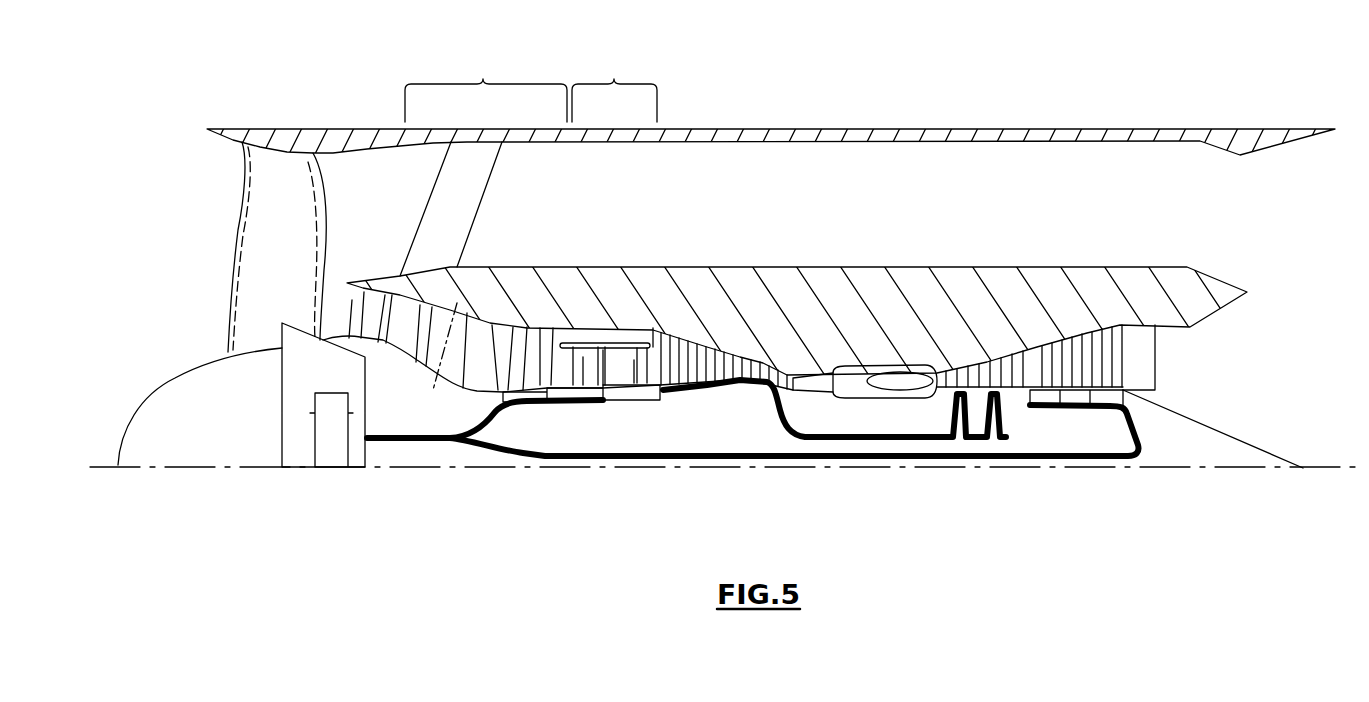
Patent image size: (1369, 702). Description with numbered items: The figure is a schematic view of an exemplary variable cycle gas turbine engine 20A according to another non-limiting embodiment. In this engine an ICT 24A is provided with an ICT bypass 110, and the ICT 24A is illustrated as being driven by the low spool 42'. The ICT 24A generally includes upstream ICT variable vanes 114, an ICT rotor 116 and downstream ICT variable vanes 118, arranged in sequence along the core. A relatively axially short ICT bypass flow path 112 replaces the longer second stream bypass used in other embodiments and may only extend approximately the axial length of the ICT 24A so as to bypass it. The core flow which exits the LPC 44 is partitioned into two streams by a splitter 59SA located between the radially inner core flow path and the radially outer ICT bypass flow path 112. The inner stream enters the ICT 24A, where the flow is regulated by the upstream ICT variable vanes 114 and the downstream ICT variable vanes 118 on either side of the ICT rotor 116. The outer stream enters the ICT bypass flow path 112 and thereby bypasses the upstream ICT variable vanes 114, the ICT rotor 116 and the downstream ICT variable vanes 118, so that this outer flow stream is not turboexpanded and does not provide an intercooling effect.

The variable cycle gas turbine engine 20A is at (1161, 91).
The LPC 44 is at (507, 221).
The ICT 24A is at (679, 221).
The ICT bypass 110 is at (620, 328).
The ICT bypass flow path 112 is at (647, 337).
The upstream ICT variable vanes 114 is at (583, 357).
The ICT rotor 116 is at (603, 350).
The downstream ICT variable vanes 118 is at (634, 360).
The splitter 59SA is at (567, 343).
The low spool 42' is at (753, 454).